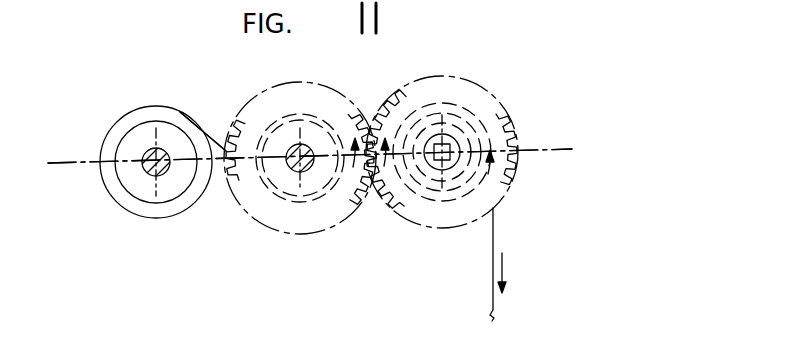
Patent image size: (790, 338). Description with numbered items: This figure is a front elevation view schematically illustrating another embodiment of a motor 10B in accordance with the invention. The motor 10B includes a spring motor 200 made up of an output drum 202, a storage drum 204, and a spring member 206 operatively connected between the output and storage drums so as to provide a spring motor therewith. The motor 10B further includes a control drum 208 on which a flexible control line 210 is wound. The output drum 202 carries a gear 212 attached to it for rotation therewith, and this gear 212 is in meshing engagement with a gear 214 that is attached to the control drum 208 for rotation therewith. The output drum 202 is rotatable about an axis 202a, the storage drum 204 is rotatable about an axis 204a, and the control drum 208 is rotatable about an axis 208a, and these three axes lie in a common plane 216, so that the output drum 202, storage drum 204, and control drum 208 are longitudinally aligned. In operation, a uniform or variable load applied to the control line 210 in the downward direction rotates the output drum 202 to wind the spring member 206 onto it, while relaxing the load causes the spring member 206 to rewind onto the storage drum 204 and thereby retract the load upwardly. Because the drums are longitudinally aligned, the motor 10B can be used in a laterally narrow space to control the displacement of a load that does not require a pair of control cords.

The motor 10B is at (152, 66).
The spring motor 200 is at (205, 208).
The output drum 202 is at (280, 240).
The axis 202a is at (306, 165).
The storage drum 204 is at (125, 218).
The axis 204a is at (149, 153).
The spring member 206 is at (216, 137).
The control drum 208 is at (508, 98).
The axis 208a is at (447, 147).
The flexible control line 210 is at (493, 240).
The gear 212 is at (360, 188).
The gear 214 is at (515, 128).
The common plane 216 is at (550, 150).